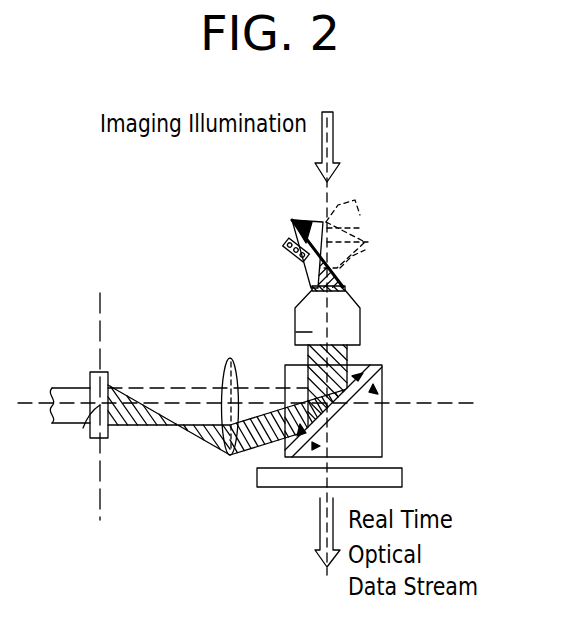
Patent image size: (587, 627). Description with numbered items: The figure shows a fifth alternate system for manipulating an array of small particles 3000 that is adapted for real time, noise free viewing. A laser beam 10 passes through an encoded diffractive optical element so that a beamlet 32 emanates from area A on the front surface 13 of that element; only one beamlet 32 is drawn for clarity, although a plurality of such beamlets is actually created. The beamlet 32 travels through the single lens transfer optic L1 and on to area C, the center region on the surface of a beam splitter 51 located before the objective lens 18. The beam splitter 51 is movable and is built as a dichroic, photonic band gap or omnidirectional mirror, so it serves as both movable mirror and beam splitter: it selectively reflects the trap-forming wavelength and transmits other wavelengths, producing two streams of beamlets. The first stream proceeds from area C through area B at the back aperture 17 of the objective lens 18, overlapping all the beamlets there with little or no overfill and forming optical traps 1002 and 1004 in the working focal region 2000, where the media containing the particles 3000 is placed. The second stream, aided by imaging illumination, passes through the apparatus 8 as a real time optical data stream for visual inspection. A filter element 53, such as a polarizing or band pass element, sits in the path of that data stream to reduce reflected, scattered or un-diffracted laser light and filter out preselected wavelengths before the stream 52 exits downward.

The apparatus 8 is at (402, 307).
The laser beam 10 is at (58, 389).
The front surface 13 is at (103, 372).
The back aperture 17 is at (360, 347).
The objective lens 18 is at (355, 323).
The beamlet 32 is at (130, 428).
The beam splitter 51 is at (360, 400).
The output data stream arrow 52 is at (320, 512).
The filter element 53 is at (402, 478).
The optical trap 1002 is at (302, 220).
The optical trap 1004 is at (363, 228).
The working focal region 2000 is at (366, 250).
The particles 3000 is at (290, 254).
The area A is at (83, 430).
The area B is at (290, 334).
The area C is at (360, 415).
The single lens transfer optic L1 is at (226, 362).